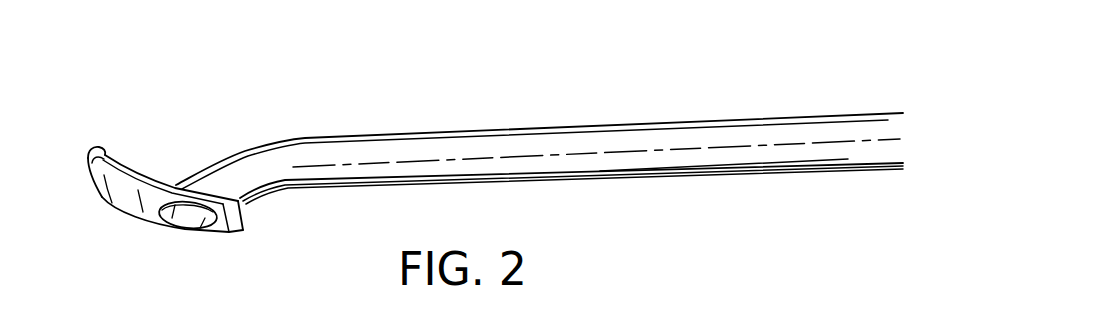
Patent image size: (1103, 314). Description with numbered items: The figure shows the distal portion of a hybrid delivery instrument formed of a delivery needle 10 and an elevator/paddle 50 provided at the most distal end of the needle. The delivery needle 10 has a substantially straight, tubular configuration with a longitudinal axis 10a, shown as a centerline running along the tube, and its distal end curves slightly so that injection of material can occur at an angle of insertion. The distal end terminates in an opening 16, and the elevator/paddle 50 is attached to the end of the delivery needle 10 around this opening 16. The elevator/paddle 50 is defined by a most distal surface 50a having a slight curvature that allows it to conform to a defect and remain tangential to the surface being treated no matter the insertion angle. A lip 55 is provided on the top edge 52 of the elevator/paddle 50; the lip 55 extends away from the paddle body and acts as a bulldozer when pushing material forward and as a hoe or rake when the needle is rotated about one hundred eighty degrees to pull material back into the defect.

The delivery needle 10 is at (472, 130).
The longitudinal axis 10a is at (625, 152).
The elevator/paddle 50 is at (145, 178).
The most distal surface 50a is at (103, 197).
The top edge 52 is at (88, 155).
The lip 55 is at (107, 148).
The opening 16 is at (195, 220).